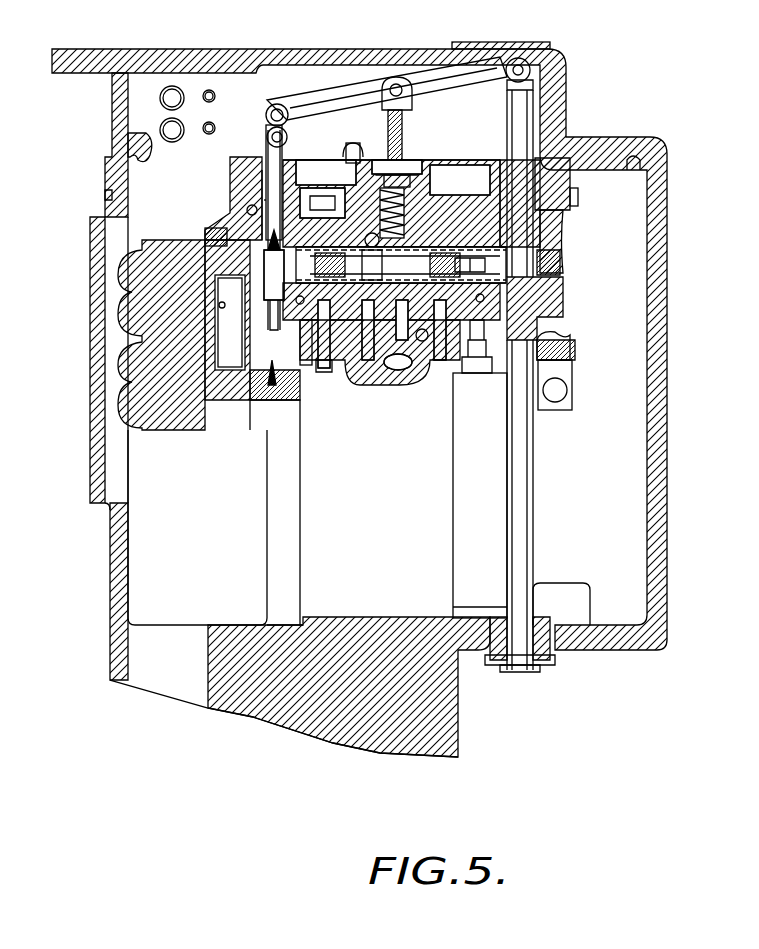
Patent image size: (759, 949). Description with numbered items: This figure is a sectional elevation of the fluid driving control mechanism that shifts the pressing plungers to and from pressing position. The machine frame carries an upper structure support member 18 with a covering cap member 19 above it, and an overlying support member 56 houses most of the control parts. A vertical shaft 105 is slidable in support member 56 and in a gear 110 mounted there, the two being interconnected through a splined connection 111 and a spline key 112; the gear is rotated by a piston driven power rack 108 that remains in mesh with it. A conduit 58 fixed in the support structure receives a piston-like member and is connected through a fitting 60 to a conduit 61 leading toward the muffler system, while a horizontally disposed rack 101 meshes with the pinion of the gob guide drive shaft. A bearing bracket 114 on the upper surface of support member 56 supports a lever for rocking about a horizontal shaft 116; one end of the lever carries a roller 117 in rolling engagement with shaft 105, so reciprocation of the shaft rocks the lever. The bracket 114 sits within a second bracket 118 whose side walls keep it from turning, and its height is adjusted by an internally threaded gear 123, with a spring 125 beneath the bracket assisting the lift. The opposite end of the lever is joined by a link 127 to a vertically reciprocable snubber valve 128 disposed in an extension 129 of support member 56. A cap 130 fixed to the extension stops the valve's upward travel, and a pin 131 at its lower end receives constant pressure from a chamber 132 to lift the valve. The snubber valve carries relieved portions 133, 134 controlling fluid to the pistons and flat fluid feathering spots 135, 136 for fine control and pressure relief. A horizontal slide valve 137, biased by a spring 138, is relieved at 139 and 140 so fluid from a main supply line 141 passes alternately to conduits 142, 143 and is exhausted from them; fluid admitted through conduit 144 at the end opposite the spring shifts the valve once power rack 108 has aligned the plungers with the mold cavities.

The covering cap member 19 is at (212, 50).
The upper structure support member 18 is at (120, 589).
The horizontal shaft 116 is at (390, 98).
The bearing bracket 114 is at (400, 84).
The roller 117 is at (525, 62).
The link 127 is at (266, 118).
The cap 130 is at (268, 146).
The extension 129 is at (238, 162).
The snubber valve 128 is at (268, 186).
The relieved portion 133 is at (268, 200).
The flat fluid feathering spot 135 is at (247, 210).
The flat fluid feathering spot 136 is at (205, 240).
The relieved portion 134 is at (270, 272).
The gear 123 is at (370, 142).
The second bracket 118 is at (405, 170).
The rack 101 is at (450, 165).
The spring 125 is at (400, 220).
The gear 110 is at (548, 160).
The support member 56 is at (572, 165).
The power rack 108 is at (580, 196).
The conduit 144 is at (565, 240).
The slide valve 137 is at (505, 264).
The splined connection 111 is at (560, 272).
The spline key 112 is at (563, 298).
The conduit 61 is at (575, 352).
The fitting 60 is at (568, 405).
The conduit 58 is at (485, 465).
The shaft 105 is at (522, 515).
The pin 131 is at (262, 398).
The chamber 132 is at (268, 390).
The spring 138 is at (302, 350).
The relief 139 is at (345, 355).
The conduit 142 is at (368, 340).
The main supply line 141 is at (398, 368).
The relief 140 is at (412, 350).
The conduit 143 is at (440, 345).